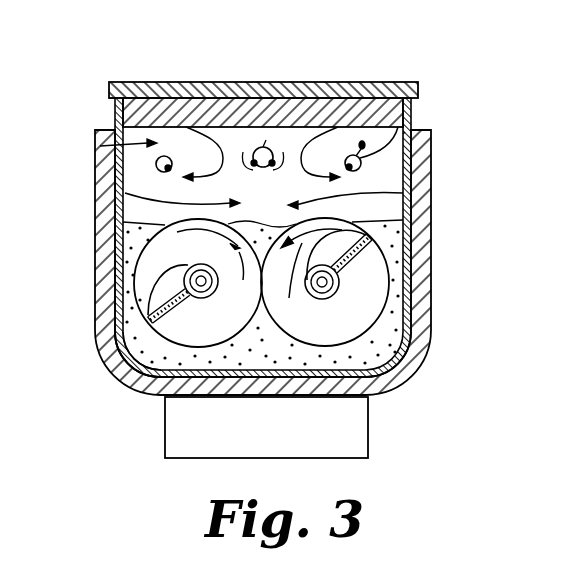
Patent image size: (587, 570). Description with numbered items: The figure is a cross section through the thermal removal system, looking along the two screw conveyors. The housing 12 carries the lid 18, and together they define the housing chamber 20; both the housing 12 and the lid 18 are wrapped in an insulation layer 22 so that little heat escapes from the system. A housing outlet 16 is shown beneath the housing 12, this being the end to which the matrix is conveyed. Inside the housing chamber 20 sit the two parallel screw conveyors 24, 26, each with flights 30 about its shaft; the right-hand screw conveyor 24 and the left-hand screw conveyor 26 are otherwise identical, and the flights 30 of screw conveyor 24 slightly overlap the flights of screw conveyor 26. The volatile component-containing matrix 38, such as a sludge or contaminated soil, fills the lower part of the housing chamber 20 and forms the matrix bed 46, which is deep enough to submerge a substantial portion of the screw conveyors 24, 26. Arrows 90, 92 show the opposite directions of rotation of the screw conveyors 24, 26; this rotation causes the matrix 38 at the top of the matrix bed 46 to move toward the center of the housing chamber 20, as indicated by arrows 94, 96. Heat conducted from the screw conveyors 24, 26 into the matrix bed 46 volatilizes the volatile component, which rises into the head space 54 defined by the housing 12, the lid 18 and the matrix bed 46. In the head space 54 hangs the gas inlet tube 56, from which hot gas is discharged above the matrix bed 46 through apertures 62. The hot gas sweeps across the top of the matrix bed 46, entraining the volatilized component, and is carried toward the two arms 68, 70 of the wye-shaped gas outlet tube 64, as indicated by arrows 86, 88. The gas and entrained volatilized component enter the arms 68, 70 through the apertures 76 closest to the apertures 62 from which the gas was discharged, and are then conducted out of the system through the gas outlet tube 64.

The housing 12 is at (107, 292).
The housing outlet 16 is at (368, 440).
The lid 18 is at (254, 96).
The housing chamber 20 is at (377, 348).
The insulation layer 22 is at (268, 82).
The screw conveyor 24 is at (392, 319).
The screw conveyor 26 is at (145, 337).
The flights 30 is at (182, 347).
The volatile component-containing matrix 38 is at (127, 370).
The matrix bed 46 is at (419, 255).
The head space 54 is at (115, 113).
The gas inlet tube 56 is at (266, 148).
The apertures 62 is at (249, 149).
The gas outlet tube 64 is at (398, 127).
The arm 68 is at (405, 132).
The arm 70 is at (100, 146).
The apertures 76 is at (157, 161).
The arrow 86 is at (362, 141).
The arrow 88 is at (182, 127).
The arrow 90 is at (326, 277).
The arrow 92 is at (200, 276).
The arrow 94 is at (403, 193).
The arrow 96 is at (125, 193).